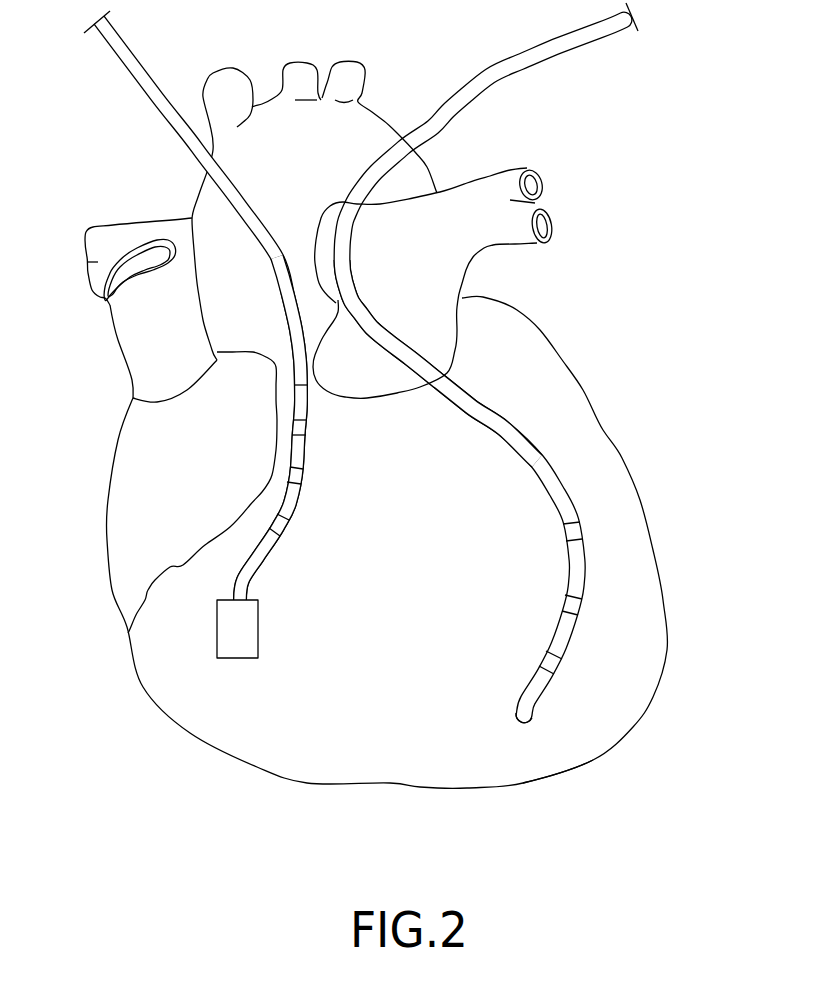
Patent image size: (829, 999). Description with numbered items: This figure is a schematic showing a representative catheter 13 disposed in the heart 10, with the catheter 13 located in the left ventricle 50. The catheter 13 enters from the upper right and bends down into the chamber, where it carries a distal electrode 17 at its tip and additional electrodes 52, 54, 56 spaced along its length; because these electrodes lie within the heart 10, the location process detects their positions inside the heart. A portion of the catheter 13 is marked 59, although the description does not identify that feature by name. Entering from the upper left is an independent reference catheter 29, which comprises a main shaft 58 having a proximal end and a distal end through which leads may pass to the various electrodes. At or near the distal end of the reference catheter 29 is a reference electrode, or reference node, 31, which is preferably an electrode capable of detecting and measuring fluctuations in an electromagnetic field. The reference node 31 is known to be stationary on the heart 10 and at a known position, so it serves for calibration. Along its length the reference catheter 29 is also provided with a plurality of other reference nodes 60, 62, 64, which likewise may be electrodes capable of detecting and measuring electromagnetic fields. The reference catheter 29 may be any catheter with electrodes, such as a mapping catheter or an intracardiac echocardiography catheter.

The heart 10 is at (540, 332).
The catheter 13 is at (533, 57).
The distal electrode 17 is at (528, 717).
The reference catheter 29 is at (117, 45).
The reference electrode 31 is at (247, 633).
The left ventricle 50 is at (523, 783).
The additional electrode 52 is at (551, 663).
The additional electrode 54 is at (571, 605).
The additional electrode 56 is at (577, 530).
The main shaft 58 is at (240, 226).
The lead body 59 is at (487, 407).
The reference node 60 is at (272, 523).
The reference node 62 is at (288, 477).
The reference node 64 is at (302, 430).